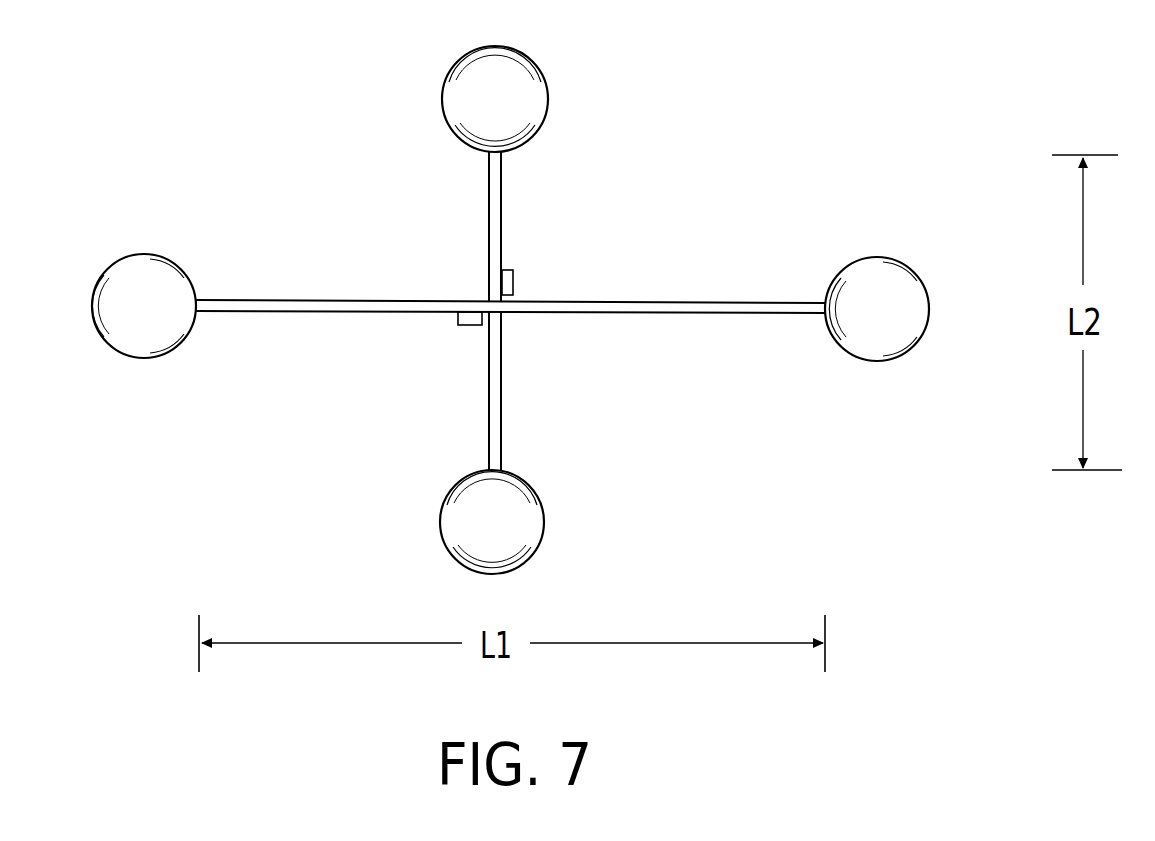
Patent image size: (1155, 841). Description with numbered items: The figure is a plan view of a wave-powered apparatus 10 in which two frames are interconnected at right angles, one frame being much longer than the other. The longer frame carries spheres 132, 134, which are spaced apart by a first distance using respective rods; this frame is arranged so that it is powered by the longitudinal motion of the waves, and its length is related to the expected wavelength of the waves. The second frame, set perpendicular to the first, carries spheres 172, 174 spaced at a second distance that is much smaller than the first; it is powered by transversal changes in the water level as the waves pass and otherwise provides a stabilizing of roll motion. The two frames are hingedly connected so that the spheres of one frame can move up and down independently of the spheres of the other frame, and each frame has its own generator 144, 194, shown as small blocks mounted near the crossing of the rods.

The exercise device assembly 10 is at (380, 161).
The sphere 132 is at (145, 347).
The sphere 134 is at (885, 343).
The generator 144 is at (468, 327).
The sphere 172 is at (527, 102).
The sphere 174 is at (510, 530).
The generator 194 is at (513, 282).